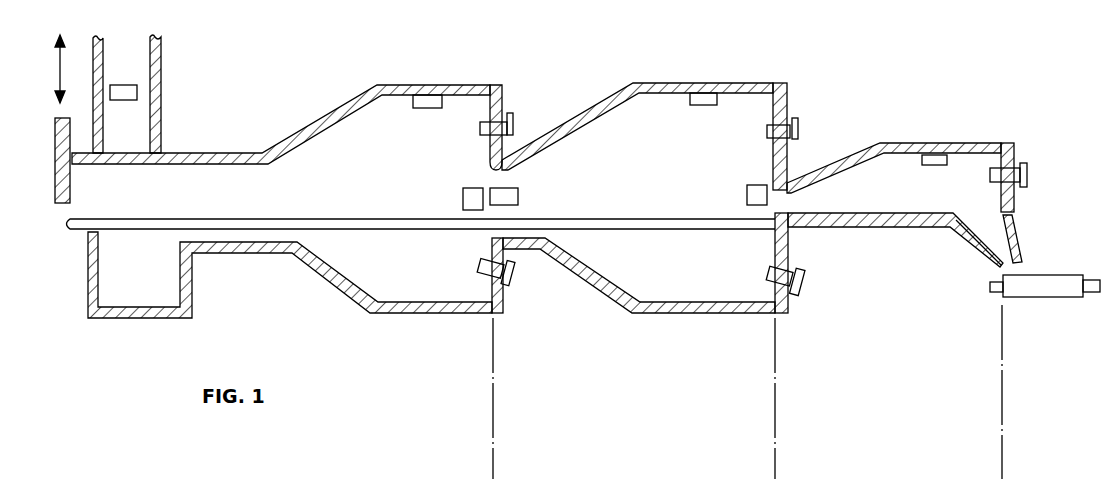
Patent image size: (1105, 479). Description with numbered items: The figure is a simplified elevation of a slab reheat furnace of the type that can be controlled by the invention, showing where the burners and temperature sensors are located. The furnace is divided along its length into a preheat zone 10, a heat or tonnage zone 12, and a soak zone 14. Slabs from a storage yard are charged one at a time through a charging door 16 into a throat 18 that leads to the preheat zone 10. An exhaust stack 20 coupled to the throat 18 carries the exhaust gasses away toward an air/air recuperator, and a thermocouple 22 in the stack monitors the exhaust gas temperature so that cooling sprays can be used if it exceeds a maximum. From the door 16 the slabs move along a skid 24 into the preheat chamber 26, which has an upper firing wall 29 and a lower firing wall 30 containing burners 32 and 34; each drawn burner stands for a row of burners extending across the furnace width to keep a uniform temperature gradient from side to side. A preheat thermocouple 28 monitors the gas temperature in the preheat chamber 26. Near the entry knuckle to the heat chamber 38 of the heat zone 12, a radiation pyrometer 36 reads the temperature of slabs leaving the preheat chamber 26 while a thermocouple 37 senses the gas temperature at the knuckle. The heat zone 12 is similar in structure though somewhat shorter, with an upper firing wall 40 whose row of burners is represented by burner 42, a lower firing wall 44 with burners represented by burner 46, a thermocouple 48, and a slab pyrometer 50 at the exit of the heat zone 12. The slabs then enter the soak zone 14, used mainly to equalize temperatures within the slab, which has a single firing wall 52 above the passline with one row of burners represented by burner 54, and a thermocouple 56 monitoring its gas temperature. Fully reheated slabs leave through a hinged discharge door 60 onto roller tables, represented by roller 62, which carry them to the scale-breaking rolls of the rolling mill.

The preheat zone 10 is at (273, 306).
The heat zone 12 is at (625, 343).
The soak zone 14 is at (905, 324).
The charging door 16 is at (56, 148).
The throat 18 is at (182, 203).
The exhaust stack 20 is at (161, 83).
The thermocouple 22 is at (123, 85).
The skid 24 is at (357, 231).
The preheat chamber 26 is at (401, 184).
The preheat thermocouple 28 is at (411, 111).
The upper firing wall 29 is at (503, 92).
The lower firing wall 30 is at (503, 313).
The burner 32 is at (513, 118).
The burner 34 is at (518, 267).
The radiation pyrometer 36 is at (463, 199).
The thermocouple 37 is at (522, 194).
The heat chamber 38 is at (674, 169).
The upper firing wall 40 is at (790, 95).
The burner 42 is at (801, 126).
The lower firing wall 44 is at (790, 310).
The burner 46 is at (803, 280).
The thermocouple 48 is at (684, 103).
The slab pyrometer 50 is at (746, 196).
The firing wall 52 is at (1017, 140).
The burner 54 is at (1034, 177).
The thermocouple 56 is at (921, 162).
The hinged discharge door 60 is at (1023, 240).
The roller 62 is at (1057, 274).